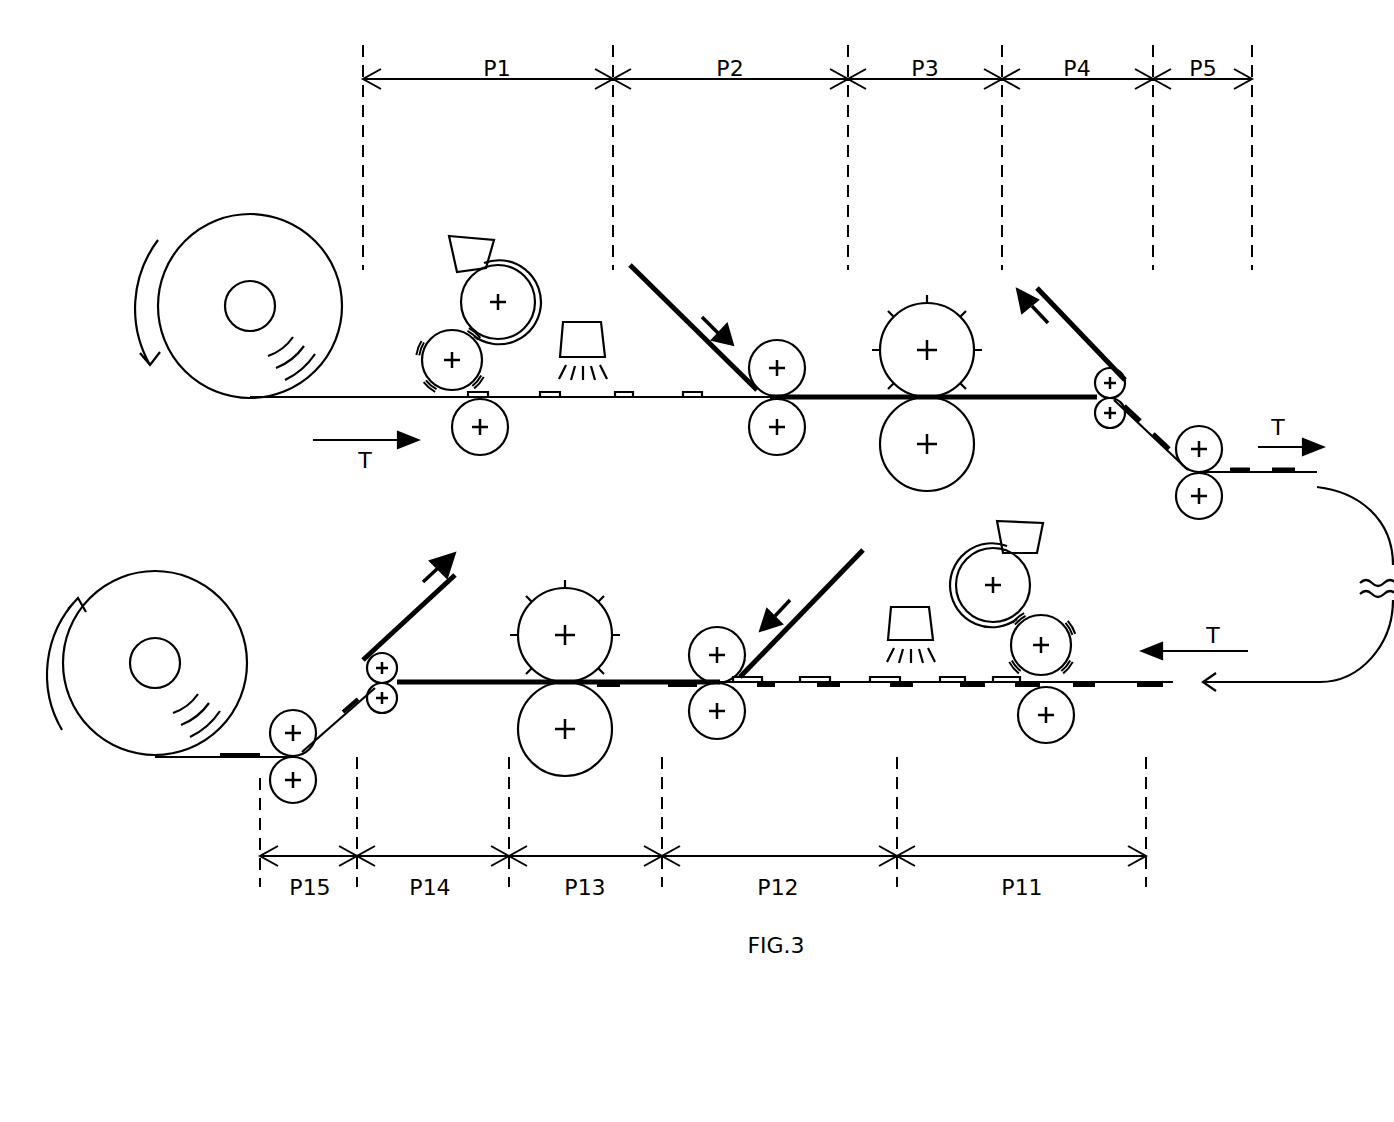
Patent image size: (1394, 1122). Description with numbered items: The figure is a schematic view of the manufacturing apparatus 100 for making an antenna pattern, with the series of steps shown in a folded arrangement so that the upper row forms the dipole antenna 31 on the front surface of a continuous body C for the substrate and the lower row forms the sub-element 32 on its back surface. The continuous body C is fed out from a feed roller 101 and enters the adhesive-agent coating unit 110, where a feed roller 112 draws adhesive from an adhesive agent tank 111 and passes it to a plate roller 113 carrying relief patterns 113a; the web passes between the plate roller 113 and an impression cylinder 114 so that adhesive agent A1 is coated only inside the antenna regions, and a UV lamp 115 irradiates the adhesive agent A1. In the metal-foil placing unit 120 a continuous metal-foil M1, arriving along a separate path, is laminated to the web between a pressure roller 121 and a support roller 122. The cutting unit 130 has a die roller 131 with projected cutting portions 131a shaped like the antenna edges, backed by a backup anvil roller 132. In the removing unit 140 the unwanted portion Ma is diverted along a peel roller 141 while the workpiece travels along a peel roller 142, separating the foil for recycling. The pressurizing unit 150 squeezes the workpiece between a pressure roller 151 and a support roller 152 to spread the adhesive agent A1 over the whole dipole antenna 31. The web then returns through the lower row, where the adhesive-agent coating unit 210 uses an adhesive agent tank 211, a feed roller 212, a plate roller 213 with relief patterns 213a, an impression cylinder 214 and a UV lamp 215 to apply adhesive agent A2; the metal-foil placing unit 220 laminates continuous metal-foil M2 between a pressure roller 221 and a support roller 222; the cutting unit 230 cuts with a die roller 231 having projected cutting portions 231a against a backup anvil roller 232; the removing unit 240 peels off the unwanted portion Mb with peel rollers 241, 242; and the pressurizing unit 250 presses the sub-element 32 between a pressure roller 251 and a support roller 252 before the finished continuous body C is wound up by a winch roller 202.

The manufacturing apparatus 100 is at (1334, 148).
The feed roller 101 is at (250, 305).
The adhesive-agent coating unit 110 is at (417, 173).
The adhesive agent tank 111 is at (486, 250).
The feed roller 112 is at (507, 286).
The plate roller 113 is at (451, 350).
The relief patterns 113a is at (428, 334).
The impression cylinder 114 is at (468, 438).
The UV lamp 115 is at (584, 336).
The metal-foil placing unit 120 is at (669, 185).
The pressure roller 121 is at (790, 350).
The support roller 122 is at (765, 440).
The cutting unit 130 is at (904, 185).
The die roller 131 is at (940, 317).
The projected cutting portions 131a is at (892, 310).
The backup anvil roller 132 is at (905, 460).
The removing unit 140 is at (1055, 228).
The peel roller 141 is at (1098, 374).
The peel roller 142 is at (1100, 424).
The pressurizing unit 150 is at (1207, 228).
The pressure roller 151 is at (1208, 440).
The support roller 152 is at (1190, 500).
The winch roller 202 is at (158, 662).
The adhesive-agent coating unit 210 is at (994, 727).
The adhesive agent tank 211 is at (1012, 535).
The feed roller 212 is at (975, 556).
The plate roller 213 is at (1042, 635).
The relief patterns 213a is at (1075, 630).
The impression cylinder 214 is at (1053, 730).
The UV lamp 215 is at (912, 612).
The metal-foil placing unit 220 is at (797, 729).
The pressure roller 221 is at (705, 635).
The support roller 222 is at (727, 720).
The cutting unit 230 is at (568, 800).
The die roller 231 is at (557, 600).
The projected cutting portions 231a is at (600, 594).
The backup anvil roller 232 is at (588, 745).
The removing unit 240 is at (408, 776).
The peel roller 241 is at (396, 658).
The peel roller 242 is at (395, 708).
The pressurizing unit 250 is at (246, 795).
The pressure roller 251 is at (290, 725).
The support roller 252 is at (298, 795).
The dipole antenna 31 is at (1140, 410).
The sub-element 32 is at (346, 700).
The adhesive agent A1 is at (422, 348).
The adhesive agent A2 is at (1080, 646).
The continuous metal-foil M1 is at (688, 318).
The continuous metal-foil M2 is at (808, 600).
The unwanted portion Ma is at (1072, 316).
The unwanted portion Mb is at (425, 600).
The continuous body C is at (606, 402).